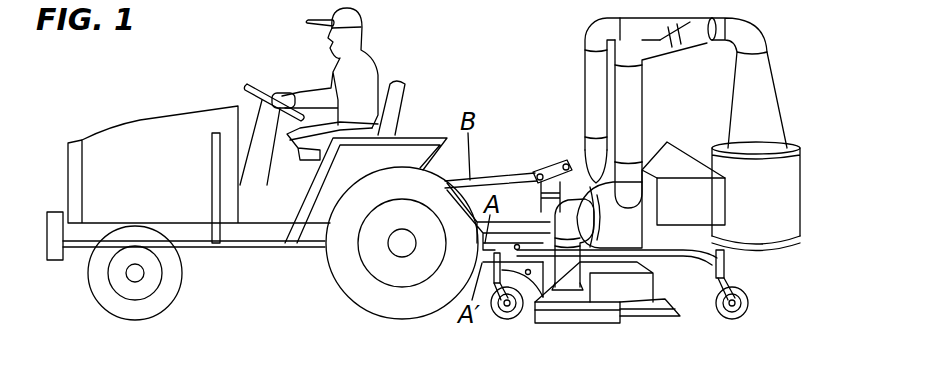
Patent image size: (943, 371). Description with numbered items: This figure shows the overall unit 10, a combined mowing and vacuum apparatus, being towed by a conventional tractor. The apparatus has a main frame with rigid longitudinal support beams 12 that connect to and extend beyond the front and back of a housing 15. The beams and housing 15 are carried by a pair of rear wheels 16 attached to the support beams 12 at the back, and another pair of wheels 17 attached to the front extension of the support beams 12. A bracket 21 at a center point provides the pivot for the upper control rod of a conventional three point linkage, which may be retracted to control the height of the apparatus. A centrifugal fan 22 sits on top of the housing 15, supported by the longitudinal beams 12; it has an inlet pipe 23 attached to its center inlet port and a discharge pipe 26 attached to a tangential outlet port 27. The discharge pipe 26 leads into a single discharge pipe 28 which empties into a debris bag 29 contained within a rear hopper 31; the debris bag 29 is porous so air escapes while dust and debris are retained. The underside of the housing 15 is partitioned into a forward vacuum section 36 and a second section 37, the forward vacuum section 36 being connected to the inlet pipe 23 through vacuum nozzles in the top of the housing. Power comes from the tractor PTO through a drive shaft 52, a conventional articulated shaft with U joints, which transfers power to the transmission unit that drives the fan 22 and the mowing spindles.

The overall unit 10 is at (525, 57).
The longitudinal support beams 12 is at (680, 257).
The housing 15 is at (692, 318).
The rear wheels 16 is at (748, 297).
The front wheels 17 is at (502, 319).
The bracket 21 is at (550, 160).
The centrifugal fan 22 is at (620, 228).
The inlet pipe 23 is at (561, 272).
The discharge pipe 26 is at (590, 84).
The tangential outlet port 27 is at (598, 153).
The single discharge pipe 28 is at (718, 18).
The debris bag 29 is at (763, 93).
The rear hopper 31 is at (787, 180).
The forward vacuum section 36 is at (585, 316).
The section 37 is at (647, 318).
The drive shaft 52 is at (510, 181).